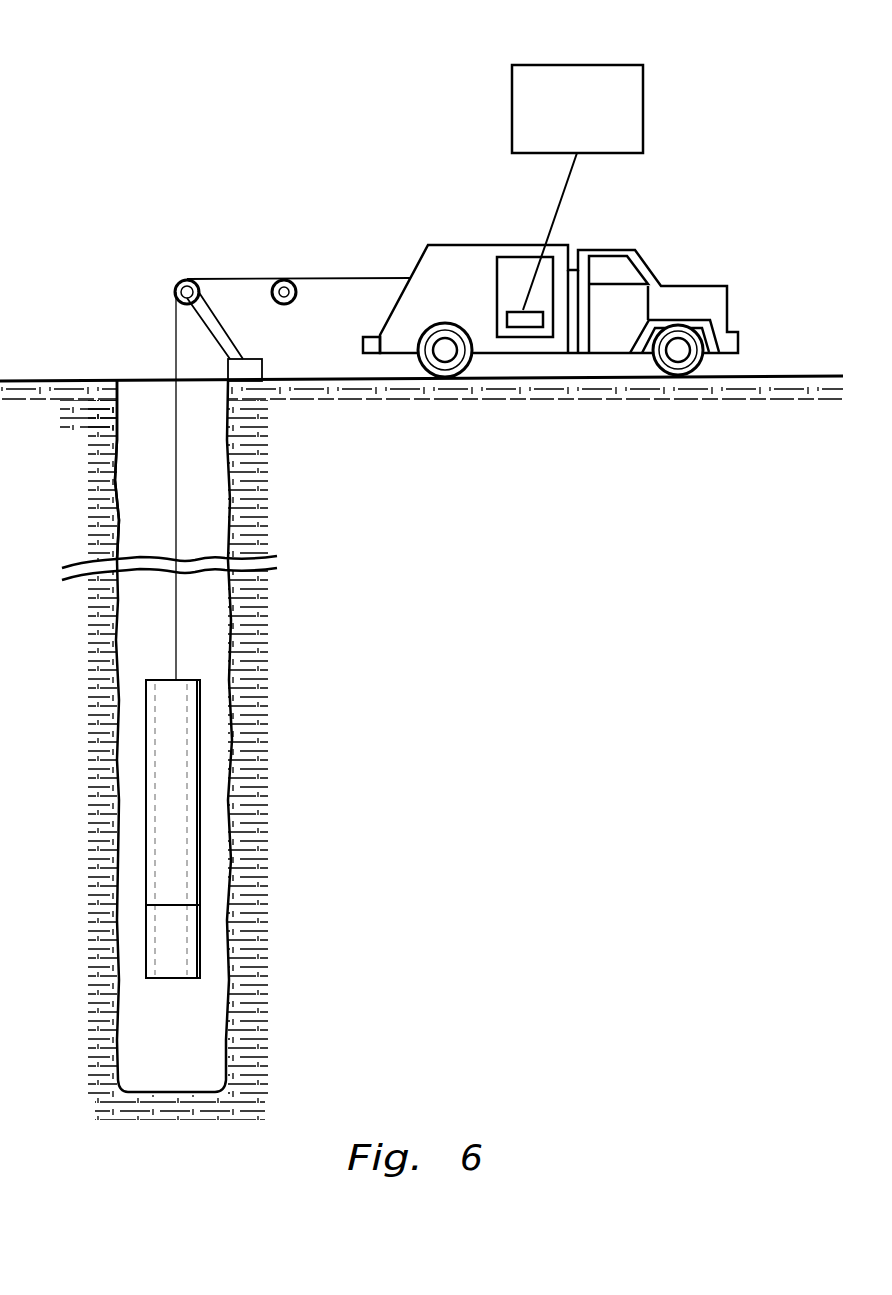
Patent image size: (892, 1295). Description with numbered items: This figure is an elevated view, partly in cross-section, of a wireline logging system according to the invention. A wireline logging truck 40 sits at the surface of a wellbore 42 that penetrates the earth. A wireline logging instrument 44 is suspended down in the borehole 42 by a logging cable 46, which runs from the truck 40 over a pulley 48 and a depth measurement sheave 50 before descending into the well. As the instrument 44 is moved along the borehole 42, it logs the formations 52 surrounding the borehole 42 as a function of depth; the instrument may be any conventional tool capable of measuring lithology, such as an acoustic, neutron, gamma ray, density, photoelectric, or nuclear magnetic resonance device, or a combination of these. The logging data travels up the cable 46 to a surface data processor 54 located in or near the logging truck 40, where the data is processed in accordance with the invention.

The wireline logging truck 40 is at (500, 245).
The wellbore 42 is at (118, 1023).
The wireline logging instrument 44 is at (163, 684).
The logging cable 46 is at (176, 342).
The pulley 48 is at (284, 279).
The depth measurement sheave 50 is at (180, 281).
The formations 52 is at (118, 452).
The surface data processor 54 is at (577, 65).